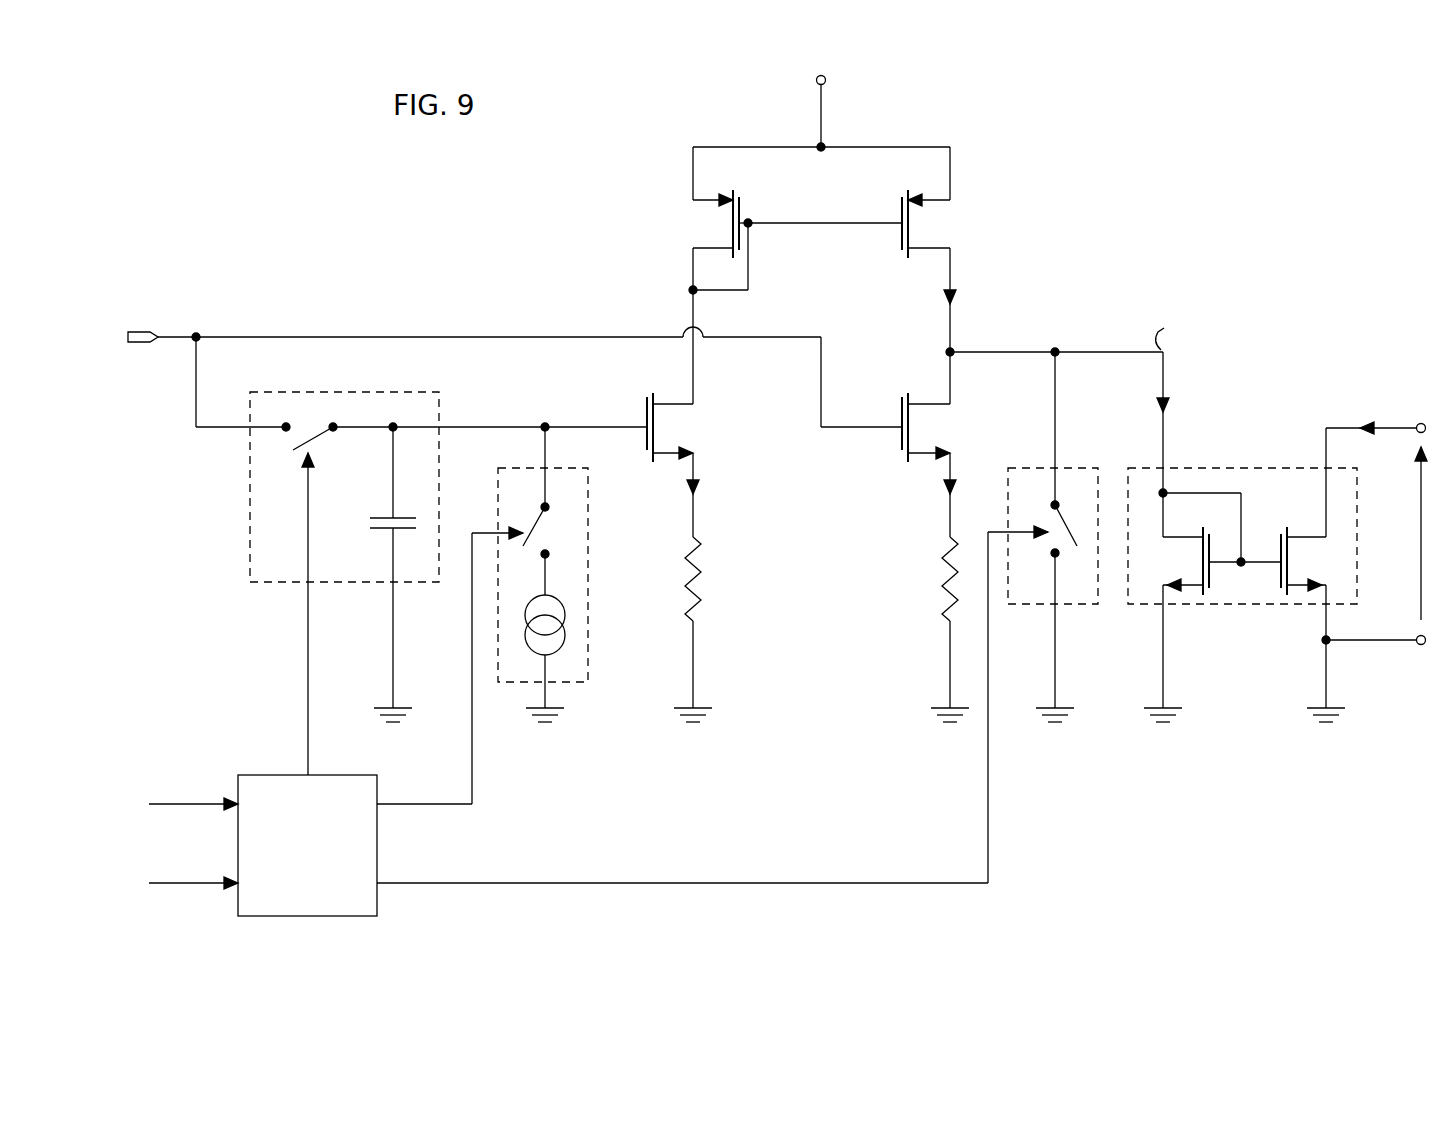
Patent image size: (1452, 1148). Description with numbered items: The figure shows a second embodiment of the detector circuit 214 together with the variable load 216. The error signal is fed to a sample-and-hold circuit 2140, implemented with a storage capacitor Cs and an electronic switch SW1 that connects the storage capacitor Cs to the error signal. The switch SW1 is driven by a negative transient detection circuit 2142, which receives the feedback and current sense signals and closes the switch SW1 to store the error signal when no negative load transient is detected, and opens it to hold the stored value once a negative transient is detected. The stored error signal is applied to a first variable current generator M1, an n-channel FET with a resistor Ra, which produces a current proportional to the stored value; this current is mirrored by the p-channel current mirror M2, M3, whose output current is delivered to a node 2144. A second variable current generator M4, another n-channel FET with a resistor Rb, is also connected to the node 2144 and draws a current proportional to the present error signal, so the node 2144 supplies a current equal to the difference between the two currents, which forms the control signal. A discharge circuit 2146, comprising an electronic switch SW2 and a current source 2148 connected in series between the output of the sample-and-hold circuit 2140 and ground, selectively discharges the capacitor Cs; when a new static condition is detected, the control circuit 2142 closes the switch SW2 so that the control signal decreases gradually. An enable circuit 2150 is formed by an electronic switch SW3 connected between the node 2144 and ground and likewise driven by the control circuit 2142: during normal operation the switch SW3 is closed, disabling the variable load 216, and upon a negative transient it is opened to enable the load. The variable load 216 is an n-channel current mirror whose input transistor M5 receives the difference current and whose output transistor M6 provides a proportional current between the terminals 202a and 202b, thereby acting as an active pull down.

The detector circuit 214 is at (763, 897).
The sample-and-hold circuit 2140 is at (274, 573).
The negative transient detection circuit 2142 is at (363, 832).
The node 2144 is at (948, 352).
The discharge circuit 2146 is at (577, 673).
The current source 2148 is at (553, 613).
The enable circuit 2150 is at (1083, 592).
The variable load 216 is at (1272, 478).
The terminal 202a is at (1421, 423).
The terminal 202b is at (1421, 646).
The variable current generator M1 is at (678, 420).
The current mirror transistor M2 is at (696, 210).
The current mirror transistor M3 is at (935, 210).
The second variable current generator M4 is at (923, 420).
The current mirror input transistor M5 is at (1187, 567).
The current mirror output transistor M6 is at (1303, 570).
The electronic switch SW1 is at (313, 426).
The electronic switch SW2 is at (548, 530).
The electronic switch SW3 is at (1068, 518).
The storage capacitor Cs is at (397, 522).
The resistor Ra is at (693, 577).
The resistor Rb is at (937, 580).